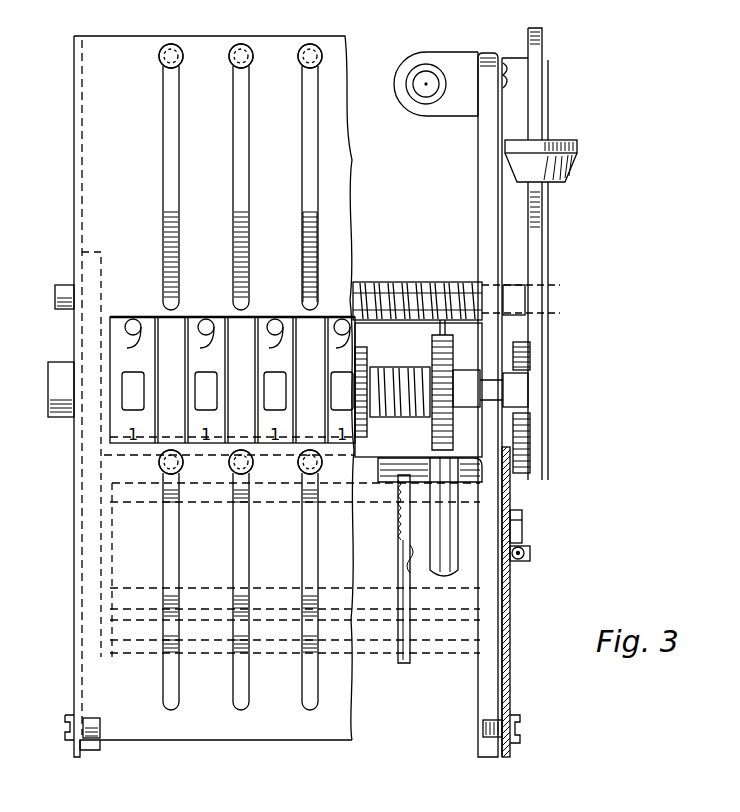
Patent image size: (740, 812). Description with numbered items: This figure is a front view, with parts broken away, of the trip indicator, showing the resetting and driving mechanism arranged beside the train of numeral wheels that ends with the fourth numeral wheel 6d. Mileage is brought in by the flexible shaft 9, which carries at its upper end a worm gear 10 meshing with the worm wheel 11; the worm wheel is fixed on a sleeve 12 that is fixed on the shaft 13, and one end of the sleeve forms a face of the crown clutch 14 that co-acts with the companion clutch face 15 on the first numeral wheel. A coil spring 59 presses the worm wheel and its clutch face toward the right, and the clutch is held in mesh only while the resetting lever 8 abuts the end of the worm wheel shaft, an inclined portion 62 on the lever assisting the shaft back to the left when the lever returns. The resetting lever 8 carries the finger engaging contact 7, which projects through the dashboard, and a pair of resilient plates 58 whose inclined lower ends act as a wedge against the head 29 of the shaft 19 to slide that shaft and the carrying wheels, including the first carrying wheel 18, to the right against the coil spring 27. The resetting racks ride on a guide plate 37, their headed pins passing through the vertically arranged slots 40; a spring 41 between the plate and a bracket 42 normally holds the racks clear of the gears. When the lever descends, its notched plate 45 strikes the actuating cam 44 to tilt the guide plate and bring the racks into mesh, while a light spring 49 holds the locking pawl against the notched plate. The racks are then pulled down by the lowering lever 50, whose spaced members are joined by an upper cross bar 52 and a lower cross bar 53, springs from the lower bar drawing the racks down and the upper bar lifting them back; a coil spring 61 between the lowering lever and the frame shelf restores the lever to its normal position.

The guide plate 37 is at (88, 163).
The vertically arranged slots 40 is at (239, 137).
The coil spring 59 is at (234, 66).
The first carrying wheel 18 is at (316, 222).
The fourth numeral wheel 6d is at (120, 430).
The notched plate 45 is at (522, 333).
The bracket 42 is at (462, 108).
The spring 41 is at (411, 102).
The resetting lever 8 is at (541, 50).
The finger engaging contact 7 is at (577, 146).
The resilient plates 58 is at (550, 212).
The clutch face 15 is at (392, 282).
The coil spring 27 is at (398, 282).
The shaft 19 is at (421, 282).
The worm gear 10 is at (470, 292).
The head 29 is at (546, 290).
The crown clutch 14 is at (410, 411).
The sleeve 12 is at (481, 405).
The shaft 13 is at (516, 388).
The inclined portion 62 is at (548, 350).
The worm wheel 11 is at (440, 440).
The upper cross bar 52 is at (378, 505).
The lower cross bar 53 is at (393, 600).
The lowering lever 50 is at (412, 560).
The flexible shaft 9 is at (458, 566).
The actuating cam 44 is at (515, 518).
The coil spring 61 is at (523, 524).
The light spring 49 is at (531, 554).